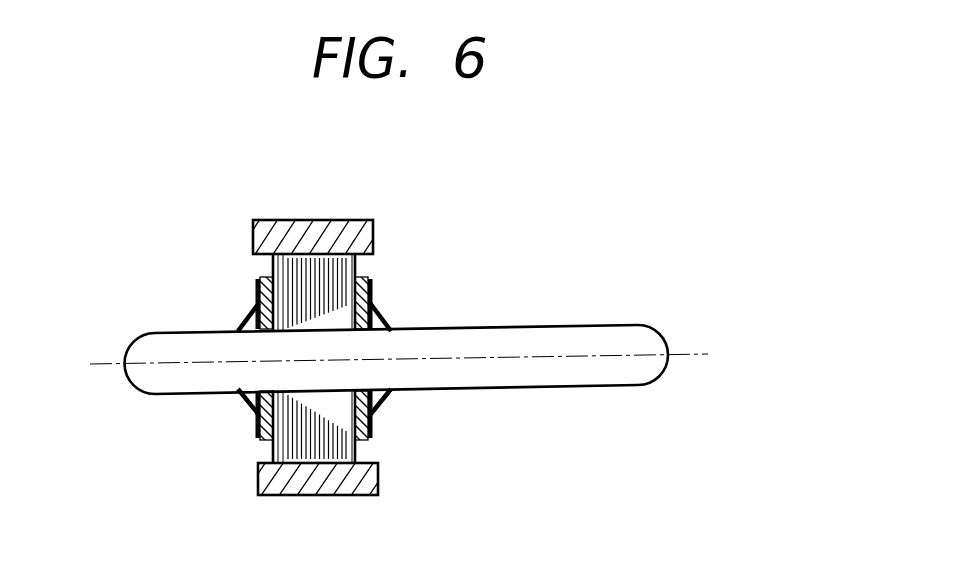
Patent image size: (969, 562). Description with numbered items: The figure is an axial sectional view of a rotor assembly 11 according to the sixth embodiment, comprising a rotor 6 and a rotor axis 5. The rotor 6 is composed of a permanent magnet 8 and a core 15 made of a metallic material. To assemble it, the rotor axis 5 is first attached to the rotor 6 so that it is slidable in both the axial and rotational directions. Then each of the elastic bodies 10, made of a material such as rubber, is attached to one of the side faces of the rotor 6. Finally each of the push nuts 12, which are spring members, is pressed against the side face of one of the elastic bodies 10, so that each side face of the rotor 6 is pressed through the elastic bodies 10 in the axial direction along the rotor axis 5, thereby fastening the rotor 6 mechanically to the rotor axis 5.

The rotor axis 5 is at (610, 325).
The rotor 6 is at (387, 449).
The permanent magnet 8 is at (365, 221).
The elastic body 10 is at (362, 277).
The rotor assembly 11 is at (245, 193).
The push nut 12 is at (254, 331).
The core 15 is at (277, 264).